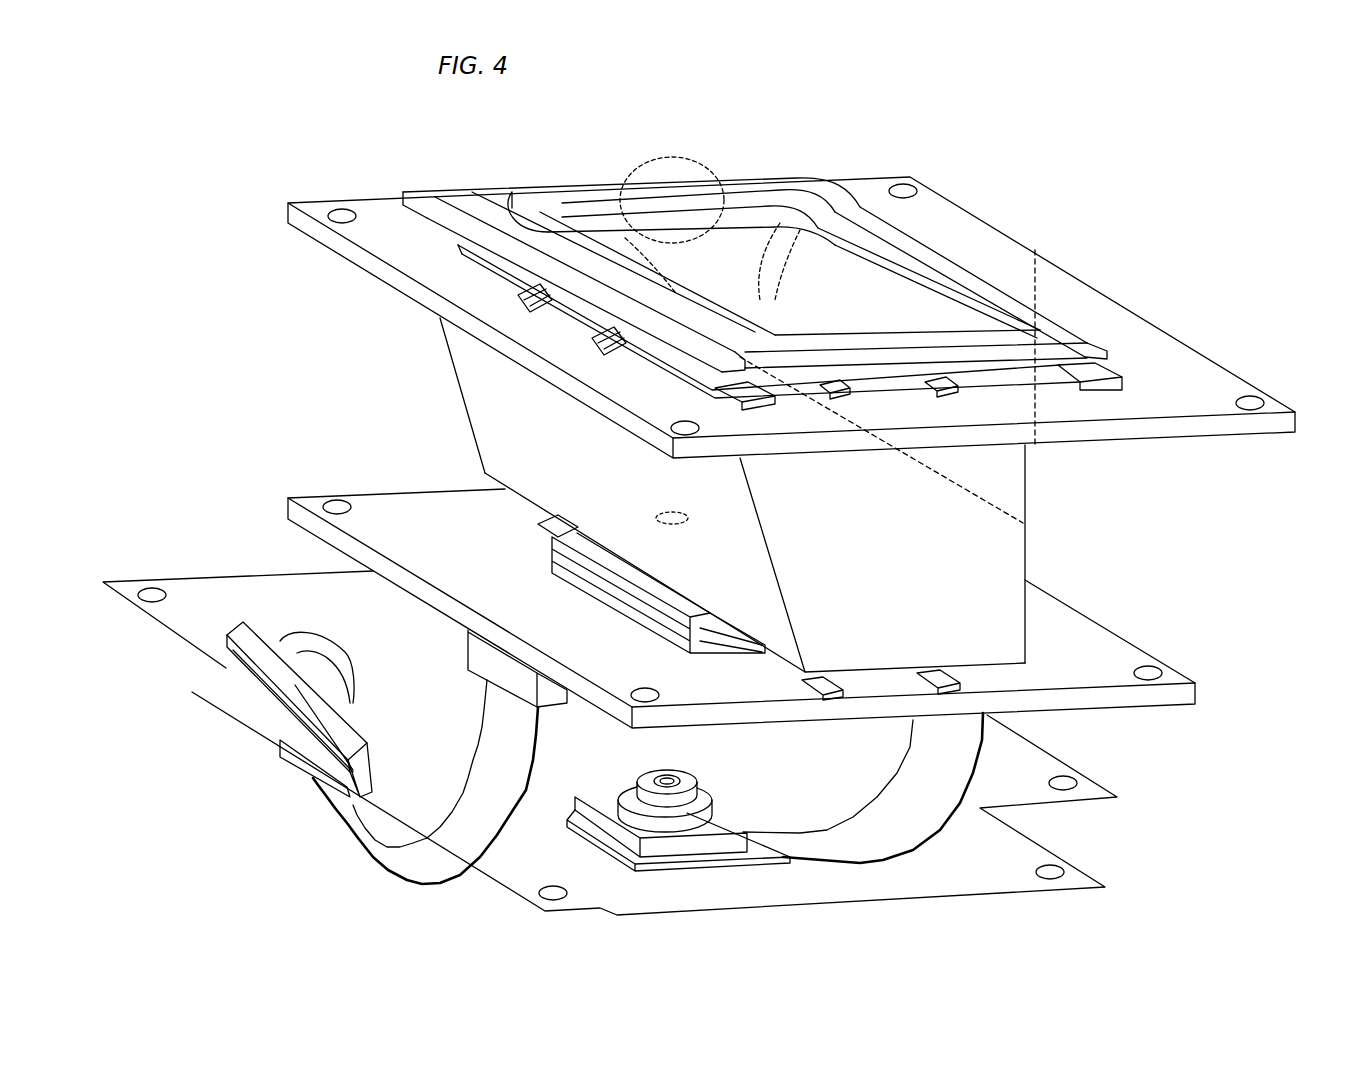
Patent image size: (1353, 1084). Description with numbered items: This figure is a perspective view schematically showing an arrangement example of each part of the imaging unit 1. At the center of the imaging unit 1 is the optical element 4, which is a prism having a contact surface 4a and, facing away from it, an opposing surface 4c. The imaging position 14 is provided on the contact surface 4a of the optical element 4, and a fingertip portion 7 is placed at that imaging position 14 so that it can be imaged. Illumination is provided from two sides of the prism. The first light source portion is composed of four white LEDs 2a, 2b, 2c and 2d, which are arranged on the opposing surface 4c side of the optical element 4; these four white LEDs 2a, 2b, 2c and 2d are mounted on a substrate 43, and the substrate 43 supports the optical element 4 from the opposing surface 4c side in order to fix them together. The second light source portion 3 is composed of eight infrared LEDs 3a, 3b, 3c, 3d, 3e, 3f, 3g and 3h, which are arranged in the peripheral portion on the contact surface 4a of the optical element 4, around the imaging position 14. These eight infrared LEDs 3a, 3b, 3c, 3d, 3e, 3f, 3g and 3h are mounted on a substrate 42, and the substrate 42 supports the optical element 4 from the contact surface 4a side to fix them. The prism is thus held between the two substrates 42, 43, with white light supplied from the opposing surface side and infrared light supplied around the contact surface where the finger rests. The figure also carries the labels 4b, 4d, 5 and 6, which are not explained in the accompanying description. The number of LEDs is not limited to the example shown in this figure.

The imaging unit 1 is at (300, 363).
The white LED 2a is at (660, 508).
The white LED 2b is at (540, 522).
The white LED 2c is at (808, 700).
The white LED 2d is at (920, 690).
The second light source portion 3 is at (536, 170).
The infrared LED 3a is at (677, 170).
The infrared LED 3b is at (583, 187).
The infrared LED 3c is at (518, 295).
The infrared LED 3d is at (628, 352).
The infrared LED 3e is at (835, 377).
The infrared LED 3f is at (920, 380).
The infrared LED 3g is at (963, 327).
The infrared LED 3h is at (925, 240).
The optical element (prism) 4 is at (428, 344).
The contact surface 4a is at (827, 260).
The side wall 4b is at (463, 396).
The opposing surface 4c is at (883, 667).
The side edge 4d is at (1027, 563).
The bracket 5 is at (237, 672).
The grommet mount 6 is at (690, 847).
The fingertip portion 7 is at (732, 172).
The imaging position 14 is at (800, 187).
The substrate 42 is at (1077, 280).
The substrate 43 is at (1125, 652).